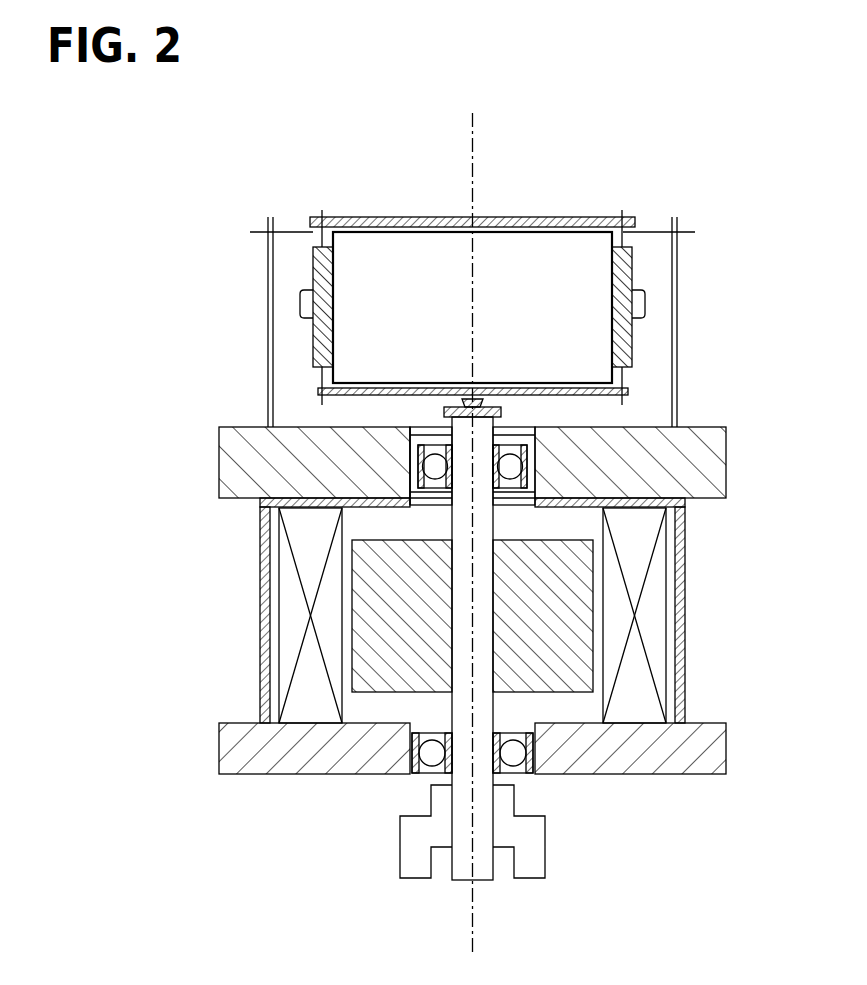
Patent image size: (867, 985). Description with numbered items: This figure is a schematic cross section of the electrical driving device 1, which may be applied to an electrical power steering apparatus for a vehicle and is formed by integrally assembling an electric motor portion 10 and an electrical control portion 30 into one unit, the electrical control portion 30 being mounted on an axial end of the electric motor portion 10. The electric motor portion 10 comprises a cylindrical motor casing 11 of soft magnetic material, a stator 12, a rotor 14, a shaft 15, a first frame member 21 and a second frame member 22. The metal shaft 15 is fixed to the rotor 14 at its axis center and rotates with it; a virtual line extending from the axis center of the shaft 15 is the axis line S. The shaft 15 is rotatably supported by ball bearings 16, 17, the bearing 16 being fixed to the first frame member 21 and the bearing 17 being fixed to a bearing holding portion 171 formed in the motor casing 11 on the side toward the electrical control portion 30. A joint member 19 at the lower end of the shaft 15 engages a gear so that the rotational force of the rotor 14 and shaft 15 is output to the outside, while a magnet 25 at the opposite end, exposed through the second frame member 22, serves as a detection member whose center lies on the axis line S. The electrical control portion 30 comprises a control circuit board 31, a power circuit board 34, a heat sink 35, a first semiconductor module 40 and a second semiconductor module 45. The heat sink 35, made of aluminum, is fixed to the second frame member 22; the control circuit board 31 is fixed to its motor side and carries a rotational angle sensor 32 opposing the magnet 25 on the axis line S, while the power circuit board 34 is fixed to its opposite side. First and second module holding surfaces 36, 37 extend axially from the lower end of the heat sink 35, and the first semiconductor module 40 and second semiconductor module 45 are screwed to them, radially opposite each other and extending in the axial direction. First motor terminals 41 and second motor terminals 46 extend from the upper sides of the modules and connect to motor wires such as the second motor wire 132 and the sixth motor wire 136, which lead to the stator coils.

The electrical driving device 1 is at (363, 884).
The electric motor portion 10 is at (691, 648).
The motor casing 11 is at (687, 586).
The stator 12 is at (630, 712).
The rotor 14 is at (570, 676).
The shaft 15 is at (466, 870).
The bearing 16 is at (417, 776).
The bearing 17 is at (537, 478).
The bearing holding portion 171 is at (410, 466).
The joint member 19 is at (530, 872).
The first frame member 21 is at (718, 750).
The second frame member 22 is at (718, 487).
The magnet 25 is at (501, 411).
The electrical control portion 30 is at (668, 209).
The control circuit board 31 is at (320, 390).
The rotational angle sensor 32 is at (460, 401).
The power circuit board 34 is at (400, 222).
The heat sink 35 is at (540, 255).
The first module holding surface 36 is at (632, 345).
The second module holding surface 37 is at (313, 345).
The first semiconductor module 40 is at (636, 258).
The first motor terminals 41 is at (657, 231).
The second semiconductor module 45 is at (311, 258).
The second motor terminals 46 is at (287, 231).
The second motor wire 132 is at (677, 354).
The sixth motor wire 136 is at (268, 352).
The axis line S is at (470, 117).